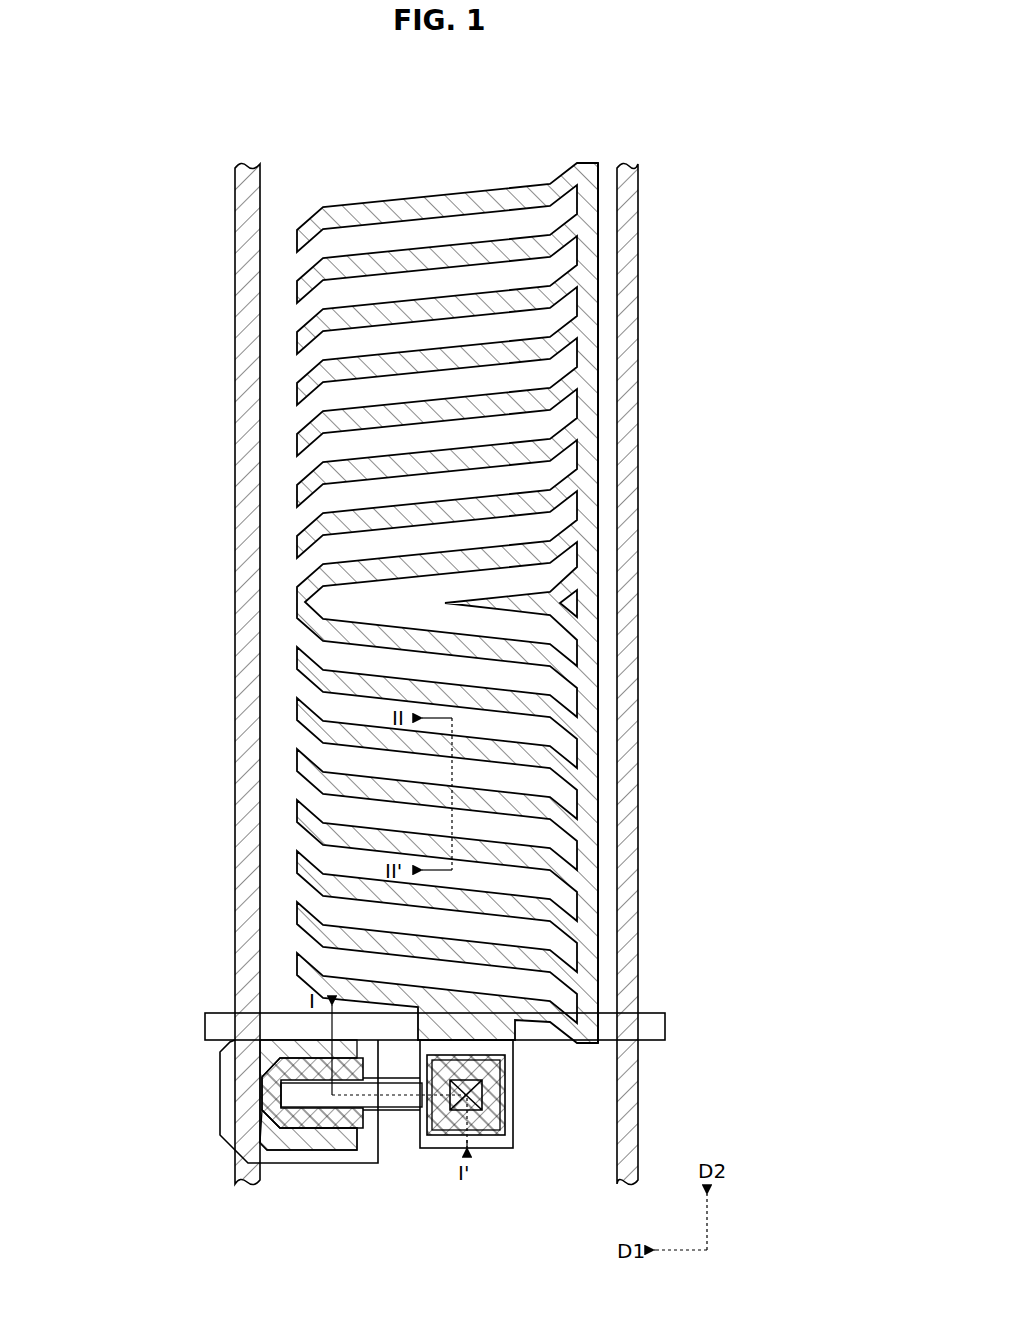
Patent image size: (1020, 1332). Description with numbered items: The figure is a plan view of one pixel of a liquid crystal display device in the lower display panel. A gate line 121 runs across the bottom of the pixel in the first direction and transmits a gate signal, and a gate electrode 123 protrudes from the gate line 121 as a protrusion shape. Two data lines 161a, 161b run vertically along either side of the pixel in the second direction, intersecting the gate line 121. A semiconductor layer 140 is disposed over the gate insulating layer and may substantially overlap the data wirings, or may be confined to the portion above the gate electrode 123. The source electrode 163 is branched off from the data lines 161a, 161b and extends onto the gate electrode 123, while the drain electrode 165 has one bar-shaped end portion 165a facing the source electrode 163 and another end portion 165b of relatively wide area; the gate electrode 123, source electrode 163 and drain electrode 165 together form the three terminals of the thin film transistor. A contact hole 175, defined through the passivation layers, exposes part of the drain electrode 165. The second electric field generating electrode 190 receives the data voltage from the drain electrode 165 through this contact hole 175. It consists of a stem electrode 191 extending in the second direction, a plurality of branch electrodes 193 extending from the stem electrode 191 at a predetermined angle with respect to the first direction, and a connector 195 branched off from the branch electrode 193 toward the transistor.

The second electric field generating electrode 190 is at (453, 549).
The stem electrode 191 is at (591, 572).
The branch electrodes 193 is at (469, 197).
The data line 161a is at (640, 643).
The data line 161b is at (240, 640).
The gate line 121 is at (668, 1027).
The gate electrode 123 is at (220, 1093).
The semiconductor layer 140 is at (275, 1064).
The source electrode 163 is at (290, 1150).
The drain electrode 165 is at (387, 1149).
The one end portion of the drain electrode 165a is at (340, 1128).
The another end portion of the drain electrode 165b is at (342, 1213).
The contact hole 175 is at (498, 1148).
The connector 195 is at (515, 1110).